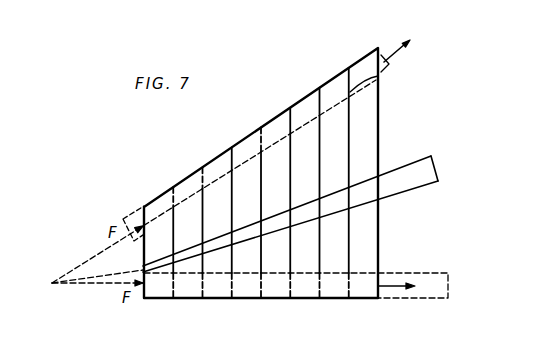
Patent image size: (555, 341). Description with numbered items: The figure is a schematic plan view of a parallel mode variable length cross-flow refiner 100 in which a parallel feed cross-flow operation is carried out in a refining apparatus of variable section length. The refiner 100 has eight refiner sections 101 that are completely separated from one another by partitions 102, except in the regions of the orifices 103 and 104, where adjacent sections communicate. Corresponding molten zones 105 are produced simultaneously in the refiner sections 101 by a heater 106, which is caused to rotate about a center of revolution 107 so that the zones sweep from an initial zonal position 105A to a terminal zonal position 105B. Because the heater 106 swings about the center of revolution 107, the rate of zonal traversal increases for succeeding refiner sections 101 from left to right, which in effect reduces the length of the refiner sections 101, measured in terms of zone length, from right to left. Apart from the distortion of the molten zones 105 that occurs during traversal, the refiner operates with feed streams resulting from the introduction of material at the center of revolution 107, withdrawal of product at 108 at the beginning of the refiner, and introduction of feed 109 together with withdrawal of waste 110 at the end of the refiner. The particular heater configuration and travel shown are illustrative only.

The parallel mode variable length cross-flow refiner 100 is at (379, 121).
The refiner sections 101 is at (184, 287).
The partitions 102 is at (231, 166).
The orifice 103 is at (256, 287).
The orifice 104 is at (293, 117).
The molten zones 105 is at (332, 202).
The initial zonal position 105A is at (360, 287).
The terminal zonal position 105B is at (368, 80).
The heater 106 is at (440, 165).
The center of revolution 107 is at (51, 284).
The product withdrawal 108 is at (379, 284).
The feed 109 is at (142, 212).
The waste withdrawal 110 is at (381, 56).